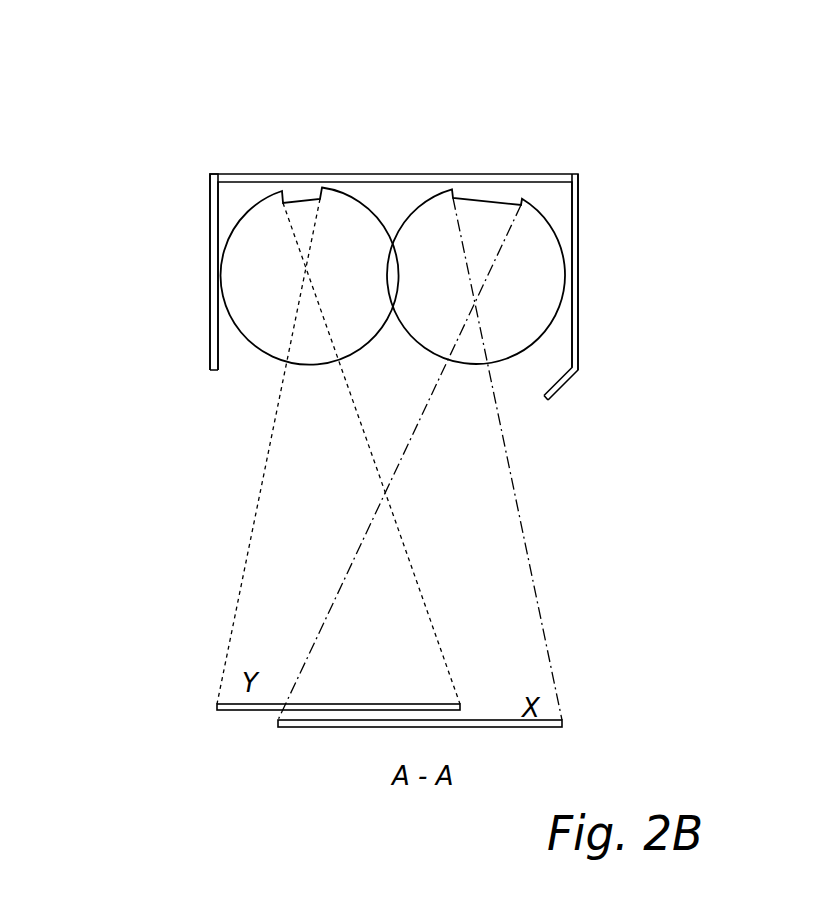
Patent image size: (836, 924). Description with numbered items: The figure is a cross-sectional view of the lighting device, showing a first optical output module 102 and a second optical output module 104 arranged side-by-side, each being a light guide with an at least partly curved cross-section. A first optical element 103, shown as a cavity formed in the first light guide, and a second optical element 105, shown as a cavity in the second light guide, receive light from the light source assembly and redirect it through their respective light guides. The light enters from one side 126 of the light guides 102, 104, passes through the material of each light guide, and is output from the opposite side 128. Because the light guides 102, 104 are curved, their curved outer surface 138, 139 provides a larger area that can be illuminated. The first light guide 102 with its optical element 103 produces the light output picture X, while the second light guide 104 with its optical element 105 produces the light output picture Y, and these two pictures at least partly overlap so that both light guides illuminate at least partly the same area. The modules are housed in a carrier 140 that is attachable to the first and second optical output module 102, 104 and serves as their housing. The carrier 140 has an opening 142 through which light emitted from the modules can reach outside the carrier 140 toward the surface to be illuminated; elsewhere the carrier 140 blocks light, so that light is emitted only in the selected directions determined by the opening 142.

The first optical output module 102 is at (608, 273).
The first optical element 103 is at (491, 196).
The second optical output module 104 is at (195, 267).
The second optical element 105 is at (302, 192).
The one side of the light guides 126 is at (447, 170).
The opposite side of the light guides 128 is at (463, 392).
The curved outer surface 138 is at (270, 365).
The curved outer surface 139 is at (512, 368).
The carrier 140 is at (580, 200).
The opening 142 is at (530, 430).